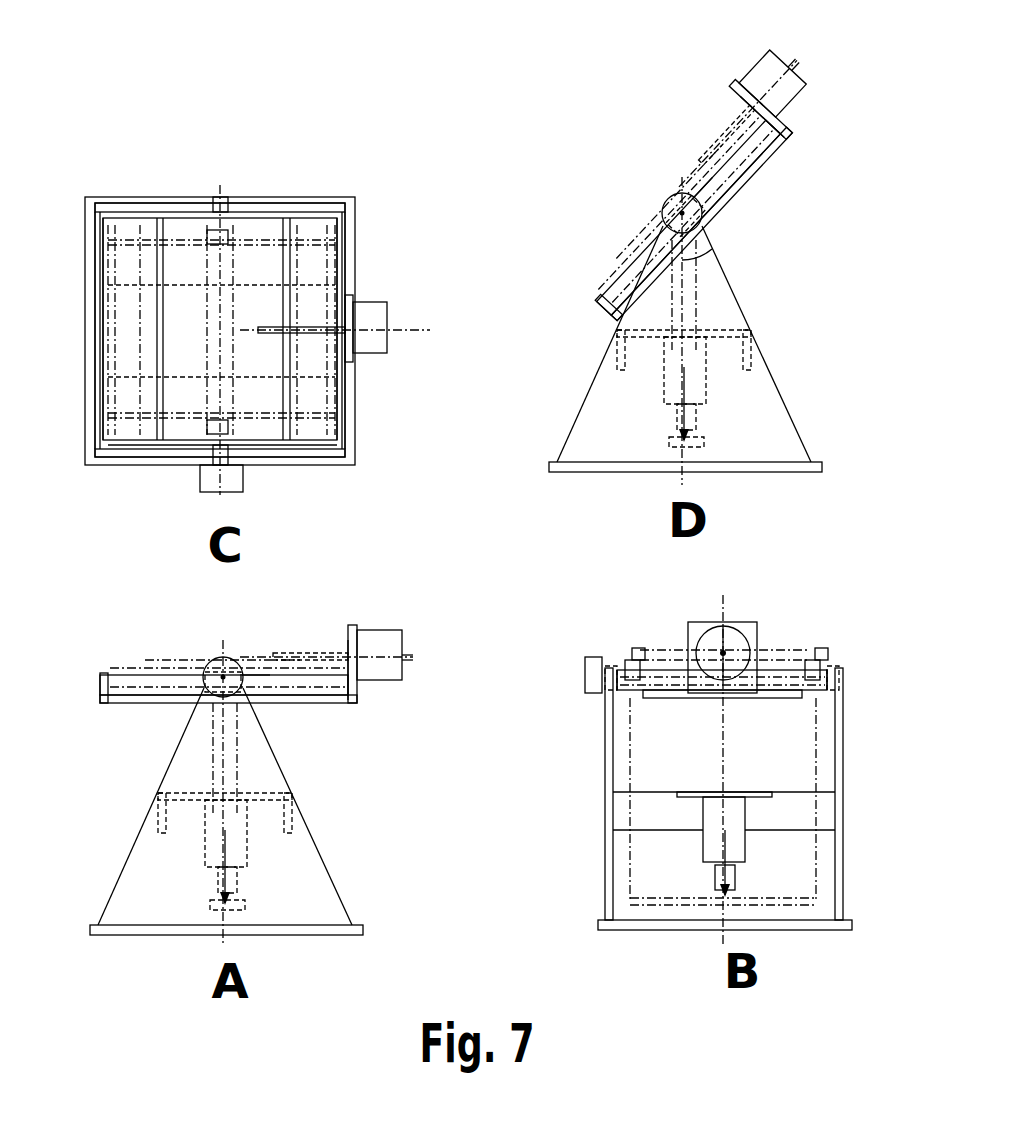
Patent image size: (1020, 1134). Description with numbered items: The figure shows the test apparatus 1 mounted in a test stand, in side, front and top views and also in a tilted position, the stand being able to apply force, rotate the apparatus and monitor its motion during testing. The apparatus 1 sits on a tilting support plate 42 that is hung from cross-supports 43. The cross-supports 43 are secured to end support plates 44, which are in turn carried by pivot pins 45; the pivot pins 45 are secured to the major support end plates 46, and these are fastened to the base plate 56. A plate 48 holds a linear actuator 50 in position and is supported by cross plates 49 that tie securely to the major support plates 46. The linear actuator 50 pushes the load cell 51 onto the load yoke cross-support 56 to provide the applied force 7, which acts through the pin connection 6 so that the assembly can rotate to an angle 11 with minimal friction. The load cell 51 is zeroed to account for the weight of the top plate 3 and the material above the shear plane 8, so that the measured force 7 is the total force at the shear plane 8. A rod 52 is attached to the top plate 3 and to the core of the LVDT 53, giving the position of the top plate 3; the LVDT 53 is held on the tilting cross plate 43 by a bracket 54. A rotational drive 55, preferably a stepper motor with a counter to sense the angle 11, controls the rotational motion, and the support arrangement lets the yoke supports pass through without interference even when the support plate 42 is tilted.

In FIG. 7C, the test apparatus 1 is at (320, 373).
In FIG. 7A, the test apparatus 1 is at (175, 650).
In FIG. 7D, the test apparatus 1 is at (632, 230).
In FIG. 7B, the test apparatus 1 is at (780, 638).
In FIG. 7A, the upper plate 3 is at (250, 665).
In FIG. 7D, the upper plate 3 is at (697, 180).
In FIG. 7C, the pin connection 6 is at (222, 235).
In FIG. 7A, the pin connection 6 is at (222, 675).
In FIG. 7D, the pin connection 6 is at (663, 213).
In FIG. 7B, the pin connection 6 is at (630, 665).
In FIG. 7A, the applied force 7 is at (228, 852).
In FIG. 7D, the applied force 7 is at (687, 389).
In FIG. 7B, the applied force 7 is at (725, 847).
In FIG. 7A, the shear plane 8 is at (100, 680).
In FIG. 7D, the shear plane 8 is at (592, 308).
In FIG. 7B, the shear plane 8 is at (650, 670).
In FIG. 7D, the angle 11 is at (702, 266).
In FIG. 7C, the tilting support plate 42 is at (318, 268).
In FIG. 7A, the tilting support plate 42 is at (278, 700).
In FIG. 7D, the tilting support plate 42 is at (740, 190).
In FIG. 7B, the tilting support plate 42 is at (678, 697).
In FIG. 7C, the cross-supports 43 is at (100, 352).
In FIG. 7A, the cross-supports 43 is at (100, 690).
In FIG. 7D, the cross-supports 43 is at (603, 318).
In FIG. 7B, the cross-supports 43 is at (833, 683).
In FIG. 7C, the end support plates 44 is at (300, 220).
In FIG. 7A, the end support plates 44 is at (152, 688).
In FIG. 7D, the end support plates 44 is at (617, 268).
In FIG. 7B, the end support plates 44 is at (790, 683).
In FIG. 7C, the pivot pins 45 is at (215, 200).
In FIG. 7A, the pivot pins 45 is at (228, 675).
In FIG. 7D, the pivot pins 45 is at (682, 203).
In FIG. 7B, the pivot pins 45 is at (607, 675).
In FIG. 7C, the major support end plates 46 is at (115, 205).
In FIG. 7A, the major support end plates 46 is at (257, 770).
In FIG. 7D, the major support end plates 46 is at (735, 322).
In FIG. 7B, the major support end plates 46 is at (610, 795).
In FIG. 7C, the plate 48 is at (200, 352).
In FIG. 7A, the plate 48 is at (193, 797).
In FIG. 7D, the plate 48 is at (707, 335).
In FIG. 7B, the plate 48 is at (695, 793).
In FIG. 7C, the cross plates 49 is at (160, 420).
In FIG. 7A, the cross plates 49 is at (160, 817).
In FIG. 7D, the cross plates 49 is at (617, 362).
In FIG. 7B, the cross plates 49 is at (780, 815).
In FIG. 7A, the linear actuator 50 is at (235, 845).
In FIG. 7D, the linear actuator 50 is at (694, 382).
In FIG. 7B, the linear actuator 50 is at (715, 838).
In FIG. 7A, the load cell 51 is at (232, 883).
In FIG. 7D, the load cell 51 is at (691, 420).
In FIG. 7B, the load cell 51 is at (735, 877).
In FIG. 7C, the rod 52 is at (320, 335).
In FIG. 7A, the rod 52 is at (303, 655).
In FIG. 7D, the rod 52 is at (727, 147).
In FIG. 7B, the rod 52 is at (725, 640).
In FIG. 7C, the linear variable differential transformer (LVDT) 53 is at (372, 318).
In FIG. 7A, the linear variable differential transformer (LVDT) 53 is at (375, 640).
In FIG. 7D, the linear variable differential transformer (LVDT) 53 is at (765, 80).
In FIG. 7B, the linear variable differential transformer (LVDT) 53 is at (715, 640).
In FIG. 7C, the bracket 54 is at (352, 300).
In FIG. 7A, the bracket 54 is at (357, 685).
In FIG. 7D, the bracket 54 is at (780, 127).
In FIG. 7B, the bracket 54 is at (745, 628).
In FIG. 7C, the rotational drive 55 is at (215, 480).
In FIG. 7A, the rotational drive 55 is at (218, 680).
In FIG. 7D, the rotational drive 55 is at (670, 207).
In FIG. 7B, the rotational drive 55 is at (585, 660).
In FIG. 7C, the base plate 56 is at (90, 285).
In FIG. 7A, the base plate 56 is at (140, 930).
In FIG. 7D, the base plate 56 is at (598, 467).
In FIG. 7B, the base plate 56 is at (650, 925).